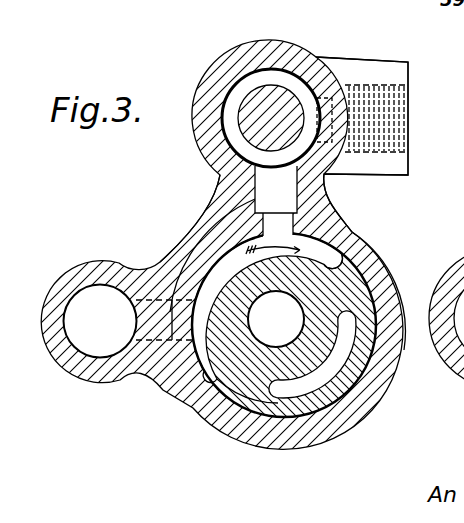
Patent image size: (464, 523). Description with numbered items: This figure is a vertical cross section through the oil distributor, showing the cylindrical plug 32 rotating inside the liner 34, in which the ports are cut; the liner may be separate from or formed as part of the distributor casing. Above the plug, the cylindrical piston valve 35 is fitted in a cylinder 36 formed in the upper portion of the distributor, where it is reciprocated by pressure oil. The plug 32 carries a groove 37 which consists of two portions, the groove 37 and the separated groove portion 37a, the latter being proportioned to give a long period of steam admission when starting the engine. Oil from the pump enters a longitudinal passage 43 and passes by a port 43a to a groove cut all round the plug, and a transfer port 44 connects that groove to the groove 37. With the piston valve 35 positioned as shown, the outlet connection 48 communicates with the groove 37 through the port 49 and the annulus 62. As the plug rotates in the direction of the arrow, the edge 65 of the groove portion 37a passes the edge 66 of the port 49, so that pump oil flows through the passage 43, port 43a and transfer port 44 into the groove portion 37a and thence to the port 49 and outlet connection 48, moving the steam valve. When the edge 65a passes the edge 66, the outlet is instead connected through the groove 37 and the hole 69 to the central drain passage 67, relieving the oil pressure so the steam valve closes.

The cylindrical plug 32 is at (340, 288).
The liner 34 is at (212, 397).
The cylindrical piston valve 35 is at (257, 107).
The cylinder 36 is at (297, 62).
The groove 37 is at (210, 354).
The groove portion 37a is at (335, 368).
The longitudinal passage 43 is at (100, 321).
The port 43a is at (135, 375).
The transfer port 44 is at (357, 398).
The outlet connection 48 is at (413, 98).
The port 49 is at (262, 170).
The annulus 62 is at (247, 88).
The edge 65 is at (327, 433).
The edge 65a is at (338, 248).
The edge 66 is at (213, 215).
The central drain passage 67 is at (276, 319).
The hole 69 is at (243, 287).